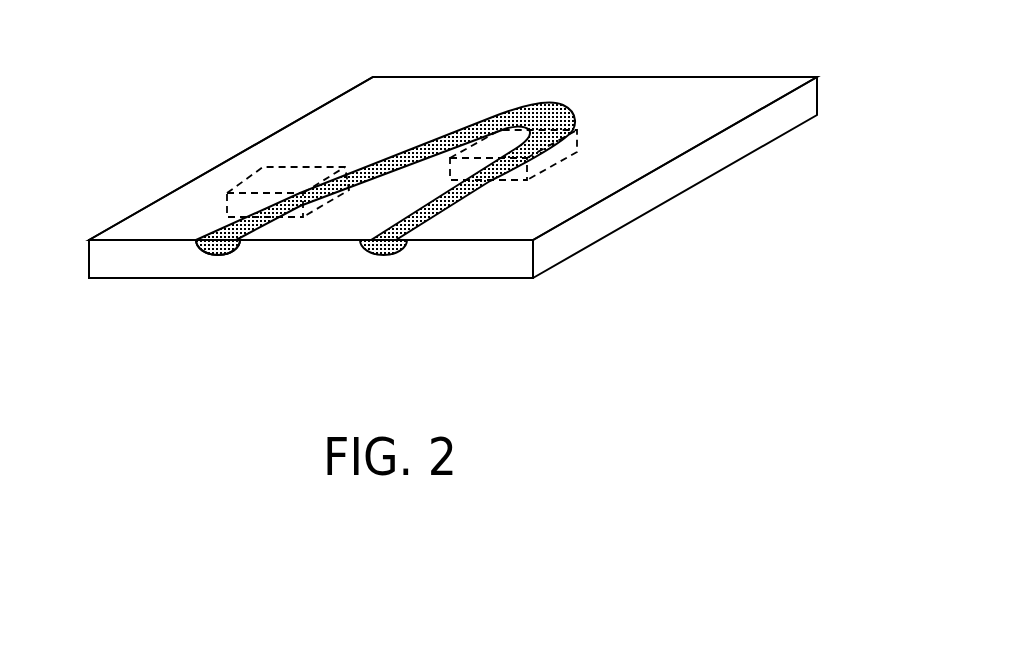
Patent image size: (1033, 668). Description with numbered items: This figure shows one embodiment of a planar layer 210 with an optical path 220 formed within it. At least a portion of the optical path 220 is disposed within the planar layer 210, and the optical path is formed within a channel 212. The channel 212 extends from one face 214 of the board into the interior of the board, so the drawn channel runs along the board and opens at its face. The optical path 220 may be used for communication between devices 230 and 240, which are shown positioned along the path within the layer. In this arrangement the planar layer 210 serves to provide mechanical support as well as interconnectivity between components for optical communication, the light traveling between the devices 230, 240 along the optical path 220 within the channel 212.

The planar layer 210 is at (807, 95).
The channel 212 is at (213, 255).
The face 214 is at (617, 73).
The optical path 220 is at (402, 152).
The device 230 is at (282, 177).
The device 240 is at (501, 145).